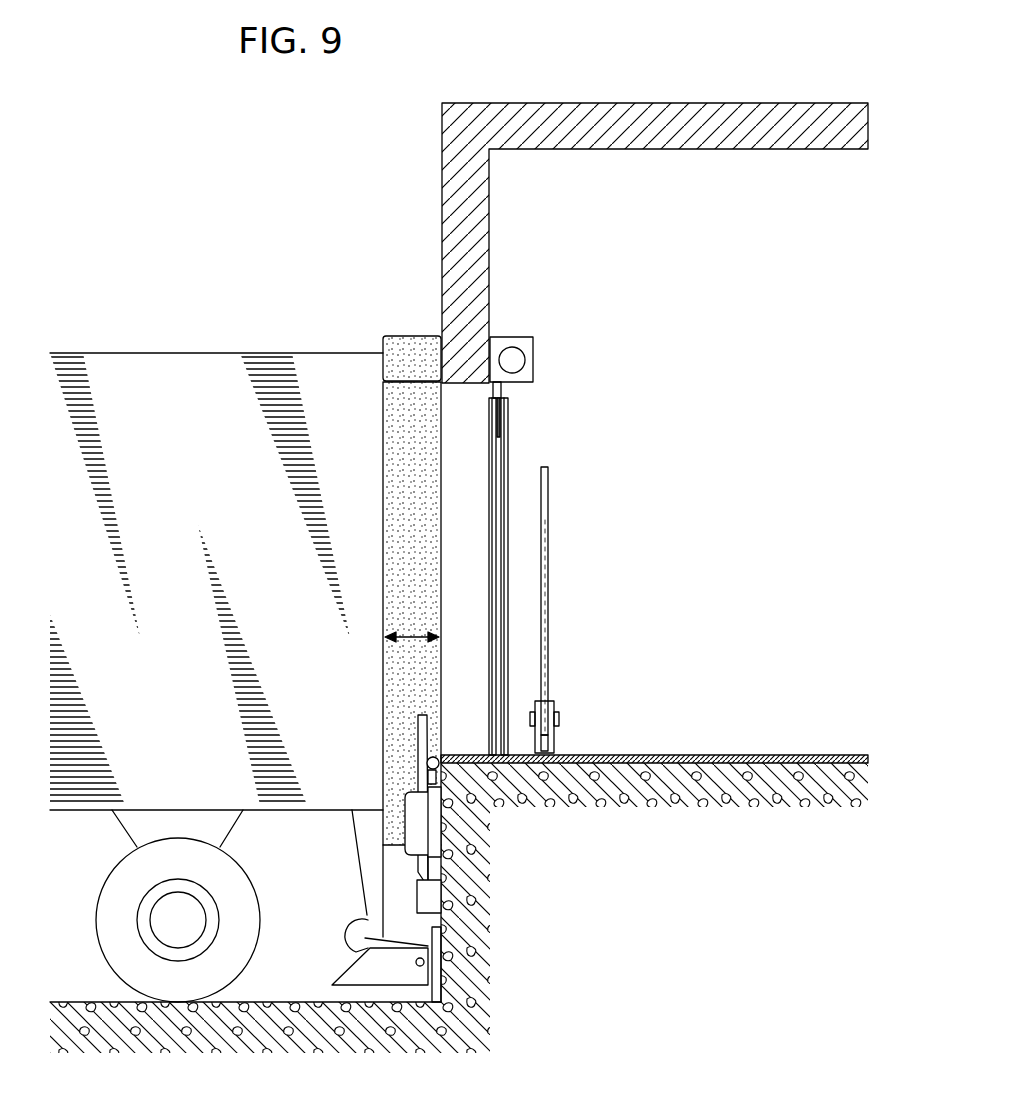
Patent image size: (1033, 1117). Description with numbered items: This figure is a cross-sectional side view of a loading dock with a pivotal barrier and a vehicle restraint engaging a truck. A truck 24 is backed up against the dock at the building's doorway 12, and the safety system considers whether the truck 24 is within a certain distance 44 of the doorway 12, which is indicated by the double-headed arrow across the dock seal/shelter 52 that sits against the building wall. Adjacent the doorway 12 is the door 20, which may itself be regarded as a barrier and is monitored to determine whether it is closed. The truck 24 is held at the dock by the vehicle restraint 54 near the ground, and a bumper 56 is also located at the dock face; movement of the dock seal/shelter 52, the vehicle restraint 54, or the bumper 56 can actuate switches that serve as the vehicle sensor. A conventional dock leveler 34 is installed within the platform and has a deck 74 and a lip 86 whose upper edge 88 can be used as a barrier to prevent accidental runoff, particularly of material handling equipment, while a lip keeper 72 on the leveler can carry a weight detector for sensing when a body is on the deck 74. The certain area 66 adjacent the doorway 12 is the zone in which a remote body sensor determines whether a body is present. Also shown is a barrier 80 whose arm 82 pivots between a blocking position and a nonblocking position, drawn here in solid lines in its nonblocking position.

The doorway 12 is at (460, 385).
The door 20 is at (500, 416).
The truck 24 is at (185, 353).
The dock leveler 34 is at (833, 755).
The certain distance 44 is at (412, 642).
The dock seal/shelter 52 is at (412, 336).
The vehicle restraint 54 is at (352, 924).
The bumper 56 is at (405, 828).
The certain area 66 is at (770, 752).
The lip keeper 72 is at (417, 895).
The deck 74 is at (790, 755).
The barrier 80 is at (548, 600).
The arm 82 is at (548, 500).
The lip 86 is at (435, 820).
The upper edge 88 is at (420, 714).